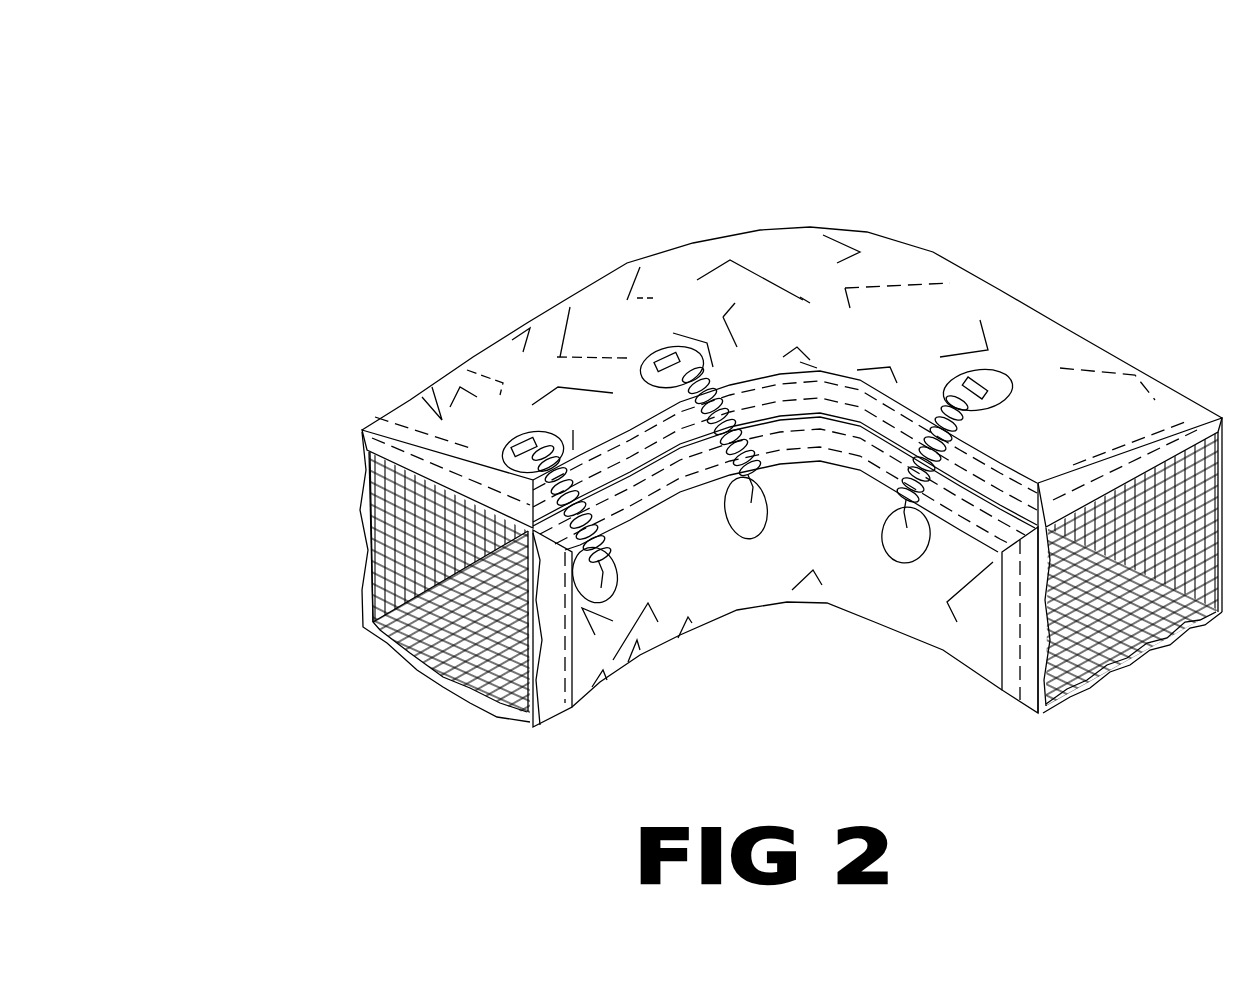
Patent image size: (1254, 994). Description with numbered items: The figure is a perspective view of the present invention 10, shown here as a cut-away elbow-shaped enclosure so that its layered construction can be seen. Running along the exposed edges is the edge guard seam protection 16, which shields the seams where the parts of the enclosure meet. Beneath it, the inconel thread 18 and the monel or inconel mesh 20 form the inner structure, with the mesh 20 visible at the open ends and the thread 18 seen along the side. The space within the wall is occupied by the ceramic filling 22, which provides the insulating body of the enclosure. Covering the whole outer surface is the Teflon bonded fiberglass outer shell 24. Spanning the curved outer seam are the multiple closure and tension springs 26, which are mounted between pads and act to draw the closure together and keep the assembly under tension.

The present invention 10 is at (802, 193).
The edge guard seam protection 16 is at (410, 427).
The inconel thread 18 is at (437, 462).
The monel or inconel mesh 20 is at (460, 635).
The ceramic filling 22 is at (528, 716).
The Teflon bonded fiberglass outer shell 24 is at (925, 270).
The closure and tension springs 26 is at (605, 510).